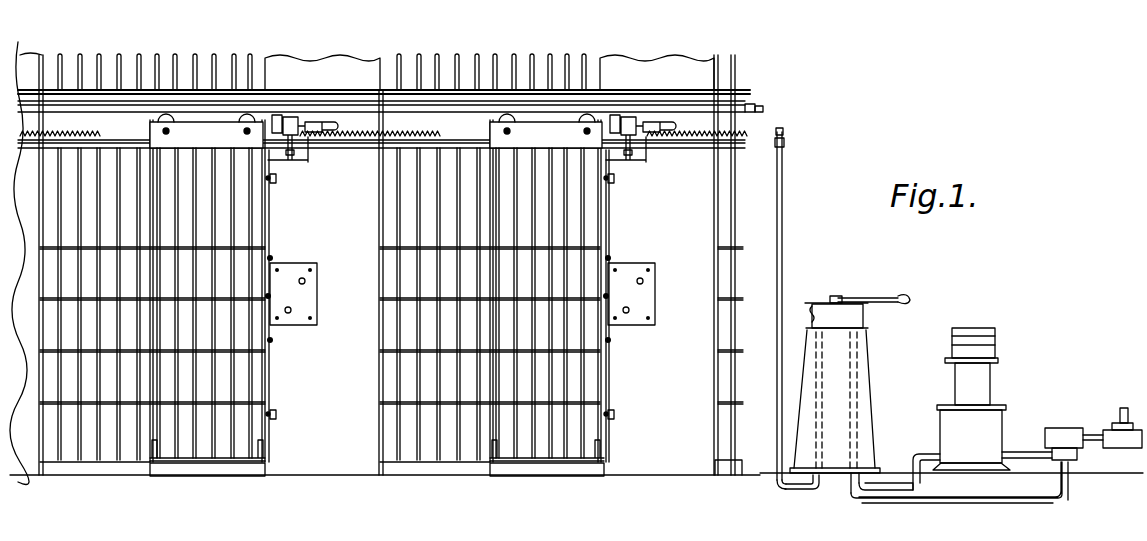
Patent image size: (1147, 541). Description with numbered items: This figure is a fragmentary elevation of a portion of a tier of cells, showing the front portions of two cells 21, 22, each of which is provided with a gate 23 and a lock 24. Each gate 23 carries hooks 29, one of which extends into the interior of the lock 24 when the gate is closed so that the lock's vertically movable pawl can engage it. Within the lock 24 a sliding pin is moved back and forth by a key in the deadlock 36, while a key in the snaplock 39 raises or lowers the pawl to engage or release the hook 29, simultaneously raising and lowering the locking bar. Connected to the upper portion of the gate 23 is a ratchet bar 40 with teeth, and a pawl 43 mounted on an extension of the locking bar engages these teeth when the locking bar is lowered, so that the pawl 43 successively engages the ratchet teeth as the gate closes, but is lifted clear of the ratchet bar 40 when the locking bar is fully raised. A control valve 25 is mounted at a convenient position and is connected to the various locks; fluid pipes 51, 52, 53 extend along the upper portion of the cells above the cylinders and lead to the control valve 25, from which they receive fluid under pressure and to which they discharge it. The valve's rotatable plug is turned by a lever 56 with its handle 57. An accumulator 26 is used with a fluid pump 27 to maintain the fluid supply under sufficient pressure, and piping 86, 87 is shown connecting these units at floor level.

The cell 21 is at (209, 309).
The cell 22 is at (549, 308).
The gate 23 is at (259, 379).
The lock 24 is at (316, 299).
The control valve 25 is at (874, 324).
The accumulator 26 is at (946, 388).
The fluid pump 27 is at (1062, 419).
The hook 29 is at (278, 180).
The deadlock 36 is at (305, 280).
The snaplock 39 is at (291, 312).
The ratchet bar 40 is at (100, 133).
The pawl 43 is at (330, 126).
The fluid pipe 51 is at (680, 105).
The fluid pipe 52 is at (757, 106).
The fluid pipe 53 is at (765, 110).
The lever 56 is at (874, 297).
The handle 57 is at (909, 297).
The air pipe 86 is at (884, 486).
The return pipe 87 is at (970, 502).